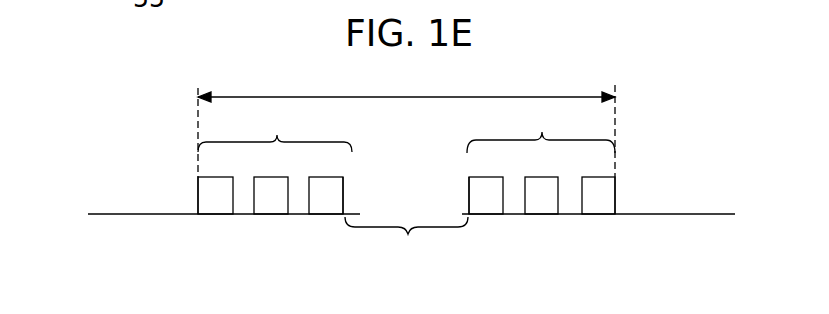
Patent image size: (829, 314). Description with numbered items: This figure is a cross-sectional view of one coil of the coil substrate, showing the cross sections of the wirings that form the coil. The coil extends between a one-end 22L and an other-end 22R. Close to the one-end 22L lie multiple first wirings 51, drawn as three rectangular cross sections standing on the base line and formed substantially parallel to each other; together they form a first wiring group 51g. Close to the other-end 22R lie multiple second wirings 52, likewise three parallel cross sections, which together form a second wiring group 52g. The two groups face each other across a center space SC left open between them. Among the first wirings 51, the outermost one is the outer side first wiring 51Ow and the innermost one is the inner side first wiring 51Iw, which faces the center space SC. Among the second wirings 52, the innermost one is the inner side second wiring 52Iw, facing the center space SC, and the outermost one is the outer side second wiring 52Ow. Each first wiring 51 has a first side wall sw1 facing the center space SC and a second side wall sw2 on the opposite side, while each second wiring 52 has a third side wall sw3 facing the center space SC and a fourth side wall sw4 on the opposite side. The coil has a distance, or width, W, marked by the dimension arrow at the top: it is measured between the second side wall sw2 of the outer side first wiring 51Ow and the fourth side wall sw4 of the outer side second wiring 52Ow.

The one-end 22L is at (199, 219).
The other-end 22R is at (628, 213).
The distance W is at (406, 120).
The first wirings 51 is at (277, 242).
The first wiring group 51g is at (275, 127).
The outer side first wiring 51Ow is at (215, 203).
The inner side first wiring 51Iw is at (327, 203).
The second wirings 52 is at (554, 241).
The second wiring group 52g is at (541, 128).
The inner side second wiring 52Iw is at (490, 203).
The outer side second wiring 52Ow is at (602, 203).
The center space SC is at (406, 245).
The first side wall sw1 is at (343, 187).
The second side wall sw2 is at (198, 192).
The third side wall sw3 is at (469, 190).
The fourth side wall sw4 is at (615, 188).